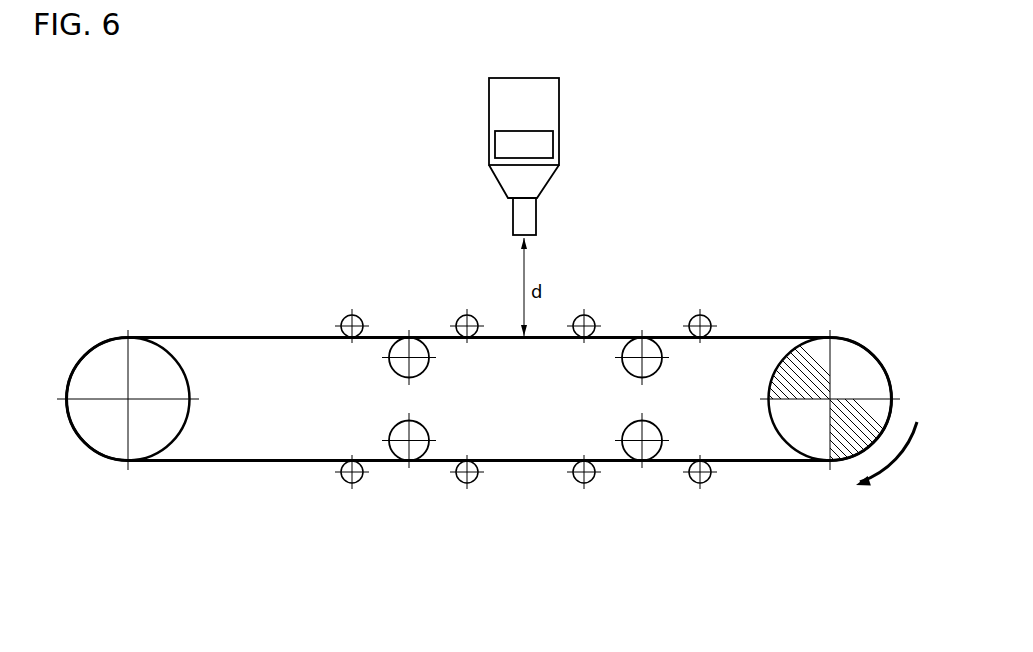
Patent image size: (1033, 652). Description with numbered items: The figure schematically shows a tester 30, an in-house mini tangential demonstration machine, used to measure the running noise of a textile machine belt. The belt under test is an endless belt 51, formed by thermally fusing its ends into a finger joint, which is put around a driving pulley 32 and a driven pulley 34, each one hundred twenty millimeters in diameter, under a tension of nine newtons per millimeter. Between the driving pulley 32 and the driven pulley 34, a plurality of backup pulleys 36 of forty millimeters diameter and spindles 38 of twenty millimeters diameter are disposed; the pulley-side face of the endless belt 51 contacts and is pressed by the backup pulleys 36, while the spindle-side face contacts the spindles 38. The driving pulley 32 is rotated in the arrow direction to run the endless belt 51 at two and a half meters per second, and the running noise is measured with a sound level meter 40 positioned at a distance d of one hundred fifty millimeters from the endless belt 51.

The tester 30 is at (734, 236).
The driving pulley 32 is at (858, 370).
The driven pulley 34 is at (103, 370).
The backup pulley 36 is at (428, 362).
The spindle 38 is at (344, 317).
The sound level meter 40 is at (489, 122).
The endless belt 51 is at (235, 337).